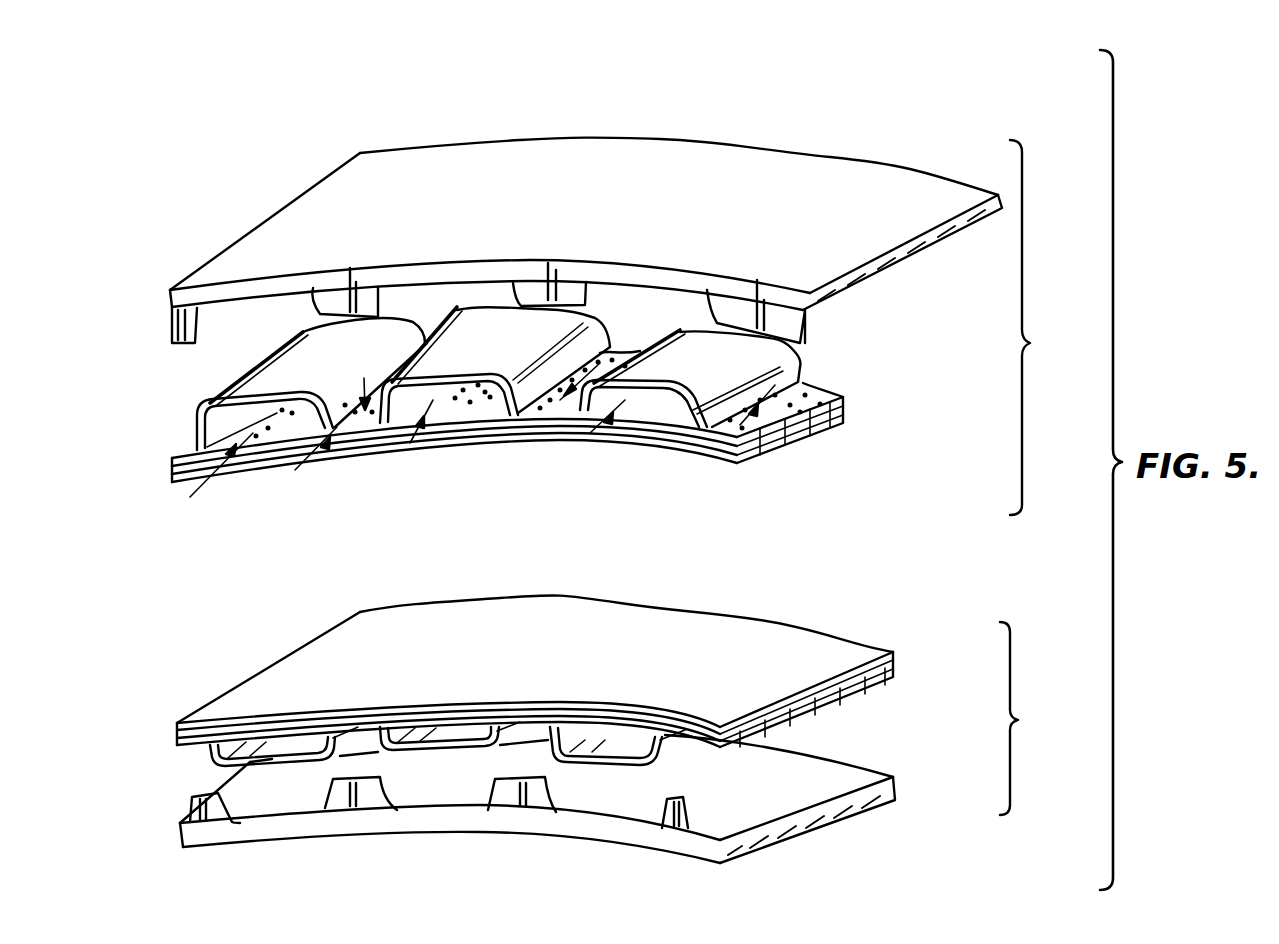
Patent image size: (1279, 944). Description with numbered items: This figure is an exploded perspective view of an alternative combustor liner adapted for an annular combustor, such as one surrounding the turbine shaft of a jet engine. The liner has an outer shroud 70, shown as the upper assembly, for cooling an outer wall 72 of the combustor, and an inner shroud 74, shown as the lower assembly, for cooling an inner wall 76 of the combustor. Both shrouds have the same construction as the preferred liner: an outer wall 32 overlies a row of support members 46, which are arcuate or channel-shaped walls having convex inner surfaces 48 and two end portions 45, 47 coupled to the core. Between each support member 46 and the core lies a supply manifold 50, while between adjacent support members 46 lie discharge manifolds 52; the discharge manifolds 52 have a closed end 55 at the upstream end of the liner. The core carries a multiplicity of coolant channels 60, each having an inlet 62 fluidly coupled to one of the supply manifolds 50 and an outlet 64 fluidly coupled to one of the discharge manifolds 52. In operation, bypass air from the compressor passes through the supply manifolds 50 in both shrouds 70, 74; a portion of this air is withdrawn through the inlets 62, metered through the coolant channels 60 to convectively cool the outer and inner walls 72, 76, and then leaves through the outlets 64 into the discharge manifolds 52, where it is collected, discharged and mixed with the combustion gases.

The outer wall 32 is at (683, 157).
The end portion 45 is at (197, 443).
The support members 46 is at (245, 376).
The end portion 47 is at (312, 432).
The convex inner surfaces 48 is at (306, 412).
The supply manifolds 50 is at (381, 414).
The discharge manifolds 52 is at (632, 342).
The closed end 55 is at (330, 298).
The coolant channels 60 is at (620, 403).
The inlet 62 is at (672, 412).
The outlet 64 is at (748, 432).
The outer shroud 70 is at (1037, 327).
The outer wall 72 is at (172, 471).
The inner shroud 74 is at (1029, 718).
The inner wall 76 is at (817, 702).